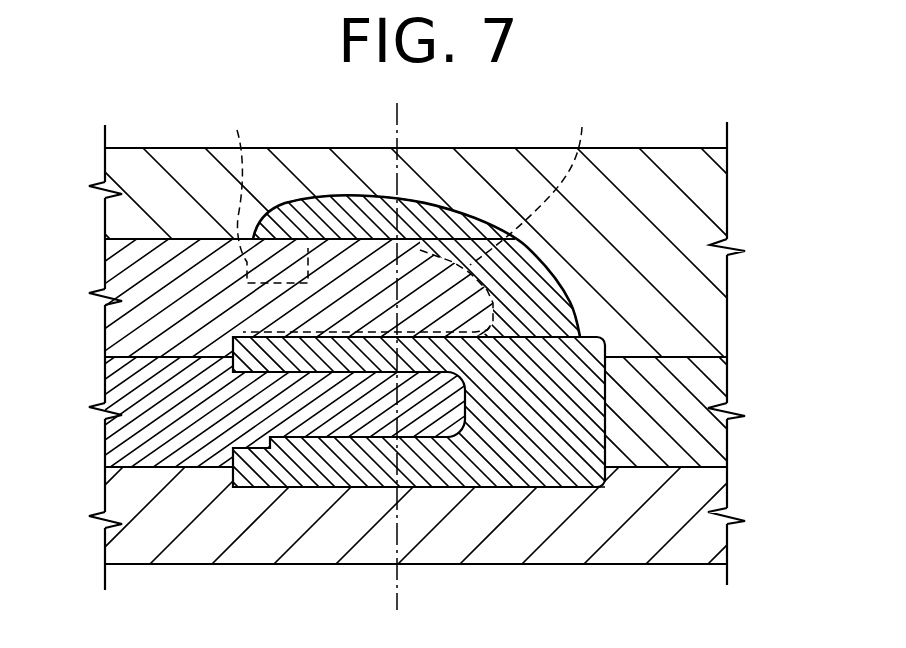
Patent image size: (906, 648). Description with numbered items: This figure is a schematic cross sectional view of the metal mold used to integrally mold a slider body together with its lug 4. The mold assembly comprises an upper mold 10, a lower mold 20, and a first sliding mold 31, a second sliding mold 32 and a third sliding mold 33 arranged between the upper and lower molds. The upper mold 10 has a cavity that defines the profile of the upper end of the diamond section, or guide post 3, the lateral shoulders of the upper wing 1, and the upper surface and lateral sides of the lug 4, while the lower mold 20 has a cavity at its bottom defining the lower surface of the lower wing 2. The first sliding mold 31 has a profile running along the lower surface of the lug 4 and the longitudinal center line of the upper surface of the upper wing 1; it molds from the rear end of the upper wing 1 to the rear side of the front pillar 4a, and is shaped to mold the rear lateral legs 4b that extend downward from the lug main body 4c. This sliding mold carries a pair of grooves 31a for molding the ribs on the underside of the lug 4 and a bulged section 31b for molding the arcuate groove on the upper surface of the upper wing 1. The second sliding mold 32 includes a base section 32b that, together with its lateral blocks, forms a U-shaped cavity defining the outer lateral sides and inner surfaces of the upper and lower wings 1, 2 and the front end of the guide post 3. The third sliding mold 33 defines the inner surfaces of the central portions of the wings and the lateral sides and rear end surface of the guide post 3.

The upper wing 1 is at (233, 347).
The lower wing 2 is at (367, 470).
The diamond section (guide post) 3 is at (605, 425).
The lug 4 is at (473, 215).
The front pillar 4a is at (560, 287).
The rear lateral legs 4b is at (266, 191).
The lug main body 4c is at (367, 200).
The upper mold 10 is at (665, 197).
The lower mold 20 is at (507, 527).
The first sliding mold 31 is at (105, 272).
The grooves 31a is at (546, 182).
The bulged section 31b is at (237, 318).
The second sliding mold 32 is at (727, 372).
The base section 32b is at (683, 407).
The third sliding mold 33 is at (105, 438).